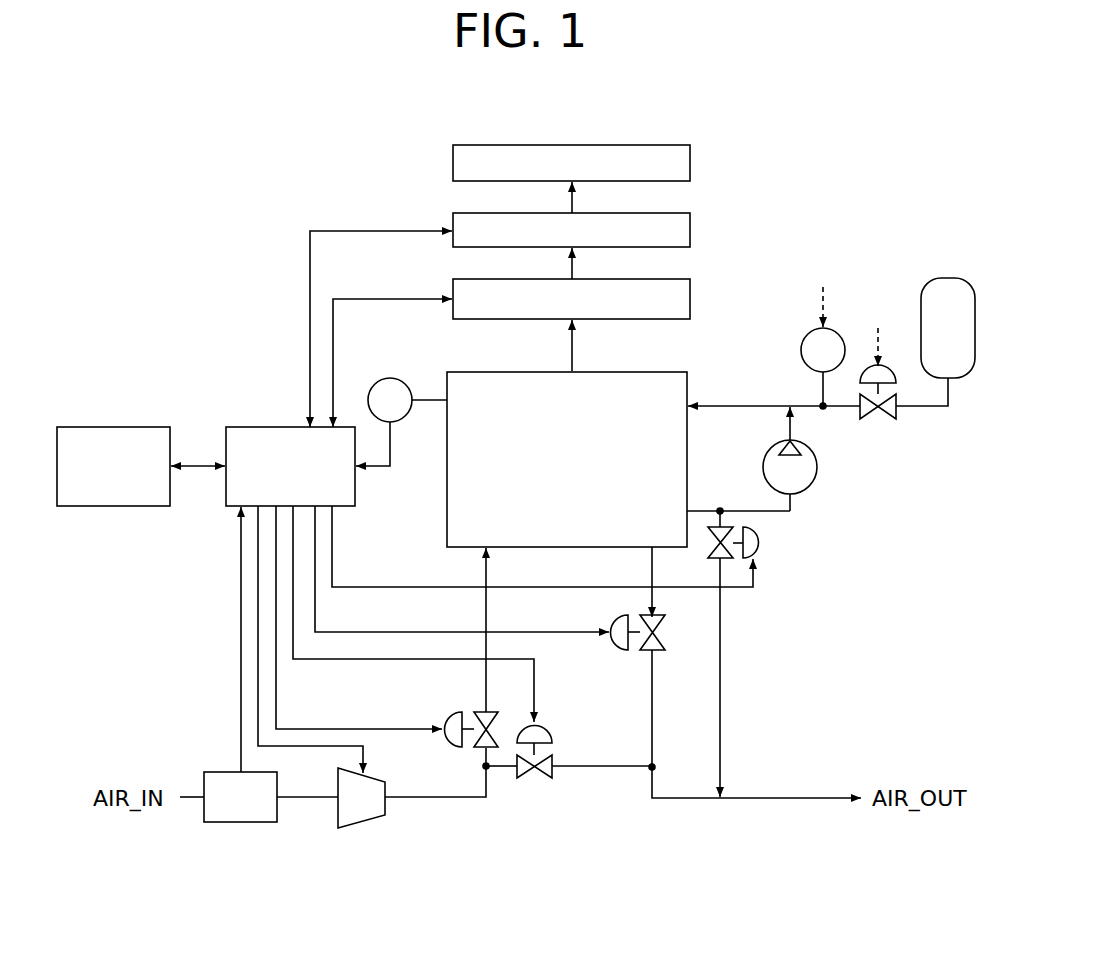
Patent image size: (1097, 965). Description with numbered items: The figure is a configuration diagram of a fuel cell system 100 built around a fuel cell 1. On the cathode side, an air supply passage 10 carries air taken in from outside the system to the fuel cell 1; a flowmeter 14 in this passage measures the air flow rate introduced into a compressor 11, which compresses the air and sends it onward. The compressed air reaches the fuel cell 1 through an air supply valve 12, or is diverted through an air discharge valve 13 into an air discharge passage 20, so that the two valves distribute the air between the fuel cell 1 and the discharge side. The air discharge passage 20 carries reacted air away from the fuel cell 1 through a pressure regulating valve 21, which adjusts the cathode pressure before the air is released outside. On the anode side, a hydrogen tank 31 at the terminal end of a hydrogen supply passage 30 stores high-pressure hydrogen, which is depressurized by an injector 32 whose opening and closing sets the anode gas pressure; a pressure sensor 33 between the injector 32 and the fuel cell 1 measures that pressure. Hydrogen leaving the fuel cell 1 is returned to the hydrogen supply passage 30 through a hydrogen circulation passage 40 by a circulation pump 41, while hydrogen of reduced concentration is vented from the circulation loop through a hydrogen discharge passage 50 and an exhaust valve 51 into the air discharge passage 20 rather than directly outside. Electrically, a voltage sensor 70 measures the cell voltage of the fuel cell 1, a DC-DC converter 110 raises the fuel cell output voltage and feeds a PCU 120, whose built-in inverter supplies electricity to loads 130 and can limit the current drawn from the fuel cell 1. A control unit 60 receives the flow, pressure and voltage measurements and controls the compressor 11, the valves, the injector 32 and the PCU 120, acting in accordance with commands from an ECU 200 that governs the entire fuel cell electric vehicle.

The fuel cell 1 is at (667, 369).
The air supply passage 10 is at (423, 795).
The compressor 11 is at (362, 822).
The air supply valve 12 is at (448, 714).
The air discharge valve 13 is at (552, 730).
The flowmeter 14 is at (240, 822).
The air discharge passage 20 is at (825, 795).
The pressure regulating valve 21 is at (625, 645).
The hydrogen supply passage 30 is at (735, 403).
The hydrogen tank 31 is at (940, 280).
The injector 32 is at (882, 367).
The pressure sensor 33 is at (807, 335).
The hydrogen circulation passage 40 is at (738, 510).
The circulation pump 41 is at (815, 482).
The hydrogen discharge passage 50 is at (720, 625).
The exhaust valve 51 is at (760, 555).
The control unit 60 is at (355, 487).
The voltage sensor 70 is at (380, 383).
The fuel cell system 100 is at (745, 838).
The DC-DC converter 110 is at (692, 297).
The PCU 120 is at (692, 232).
The loads 130 is at (692, 163).
The electronic control unit (ECU) 200 is at (122, 506).